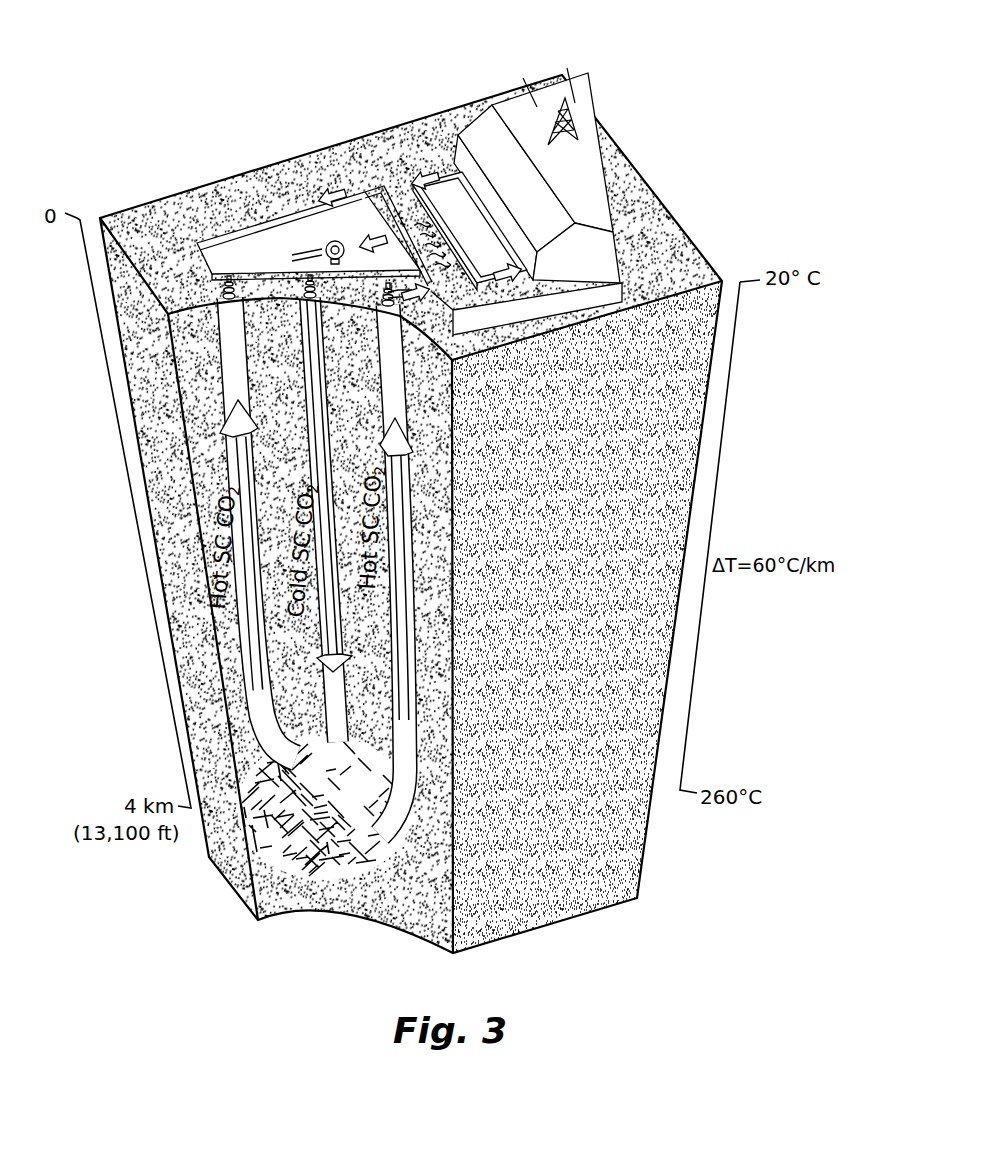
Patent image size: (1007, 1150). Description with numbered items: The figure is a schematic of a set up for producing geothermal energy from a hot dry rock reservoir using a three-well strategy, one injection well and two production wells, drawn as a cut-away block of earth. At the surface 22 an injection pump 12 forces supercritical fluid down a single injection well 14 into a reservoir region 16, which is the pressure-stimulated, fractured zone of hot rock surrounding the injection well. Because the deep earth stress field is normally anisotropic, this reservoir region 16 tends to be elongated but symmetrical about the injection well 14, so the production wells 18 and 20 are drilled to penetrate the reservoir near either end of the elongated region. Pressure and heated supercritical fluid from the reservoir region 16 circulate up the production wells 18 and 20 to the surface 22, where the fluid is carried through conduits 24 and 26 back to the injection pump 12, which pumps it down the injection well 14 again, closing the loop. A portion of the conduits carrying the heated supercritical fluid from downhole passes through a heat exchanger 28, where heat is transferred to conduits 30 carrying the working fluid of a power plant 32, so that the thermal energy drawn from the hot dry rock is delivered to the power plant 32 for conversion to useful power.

The injection pump 12 is at (330, 250).
The injection well 14 is at (317, 343).
The reservoir region 16 is at (300, 842).
The production well 18 is at (252, 448).
The production well 20 is at (395, 796).
The surface 22 is at (632, 185).
The conduit 24 is at (405, 240).
The conduit 26 is at (412, 200).
The heat exchanger 28 is at (390, 195).
The conduits 30 is at (578, 310).
The power plant 32 is at (562, 183).